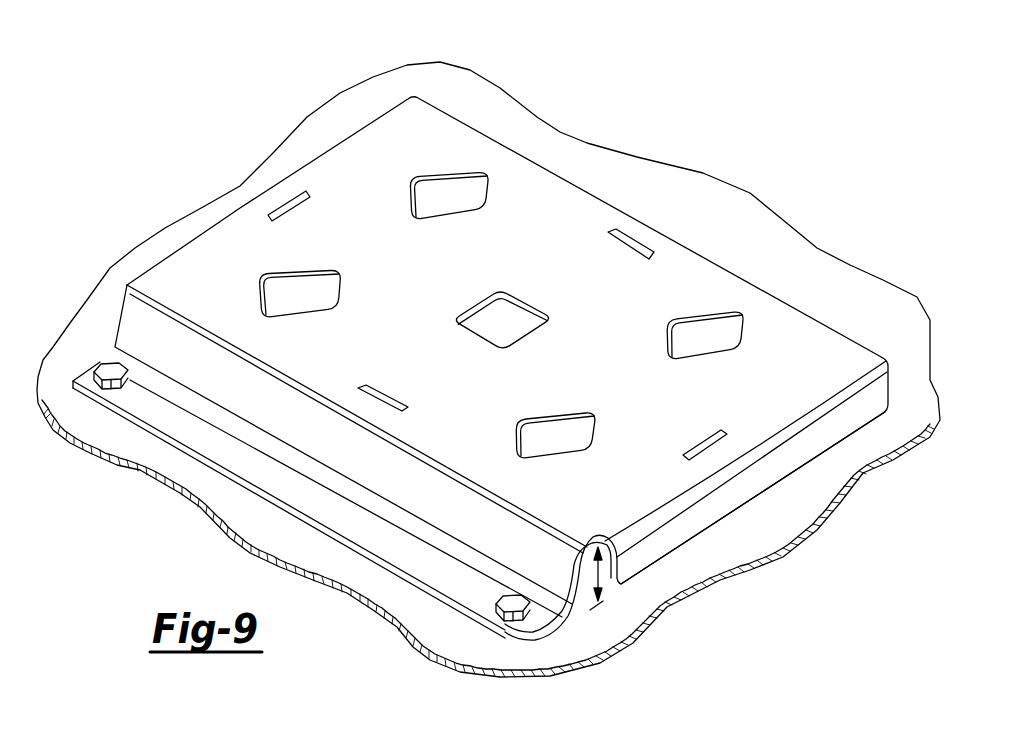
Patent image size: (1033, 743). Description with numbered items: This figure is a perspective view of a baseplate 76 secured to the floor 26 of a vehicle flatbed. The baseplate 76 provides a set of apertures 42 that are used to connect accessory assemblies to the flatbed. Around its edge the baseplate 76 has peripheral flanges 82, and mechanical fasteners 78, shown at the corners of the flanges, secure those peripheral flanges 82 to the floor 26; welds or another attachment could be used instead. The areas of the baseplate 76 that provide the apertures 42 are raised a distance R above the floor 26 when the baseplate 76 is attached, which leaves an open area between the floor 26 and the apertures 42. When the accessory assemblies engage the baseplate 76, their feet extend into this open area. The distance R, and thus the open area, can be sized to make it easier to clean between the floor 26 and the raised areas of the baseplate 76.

The floor 26 is at (777, 503).
The apertures 42 is at (306, 300).
The baseplate 76 is at (788, 343).
The mechanical fasteners 78 is at (507, 600).
The peripheral flanges 82 is at (253, 463).
The distance R is at (607, 582).